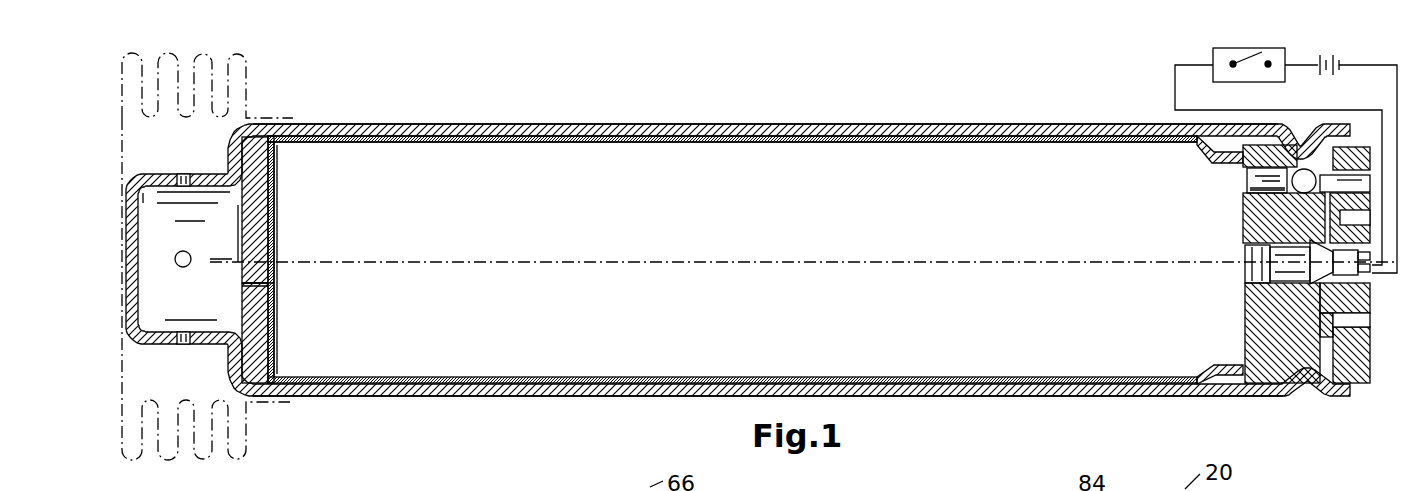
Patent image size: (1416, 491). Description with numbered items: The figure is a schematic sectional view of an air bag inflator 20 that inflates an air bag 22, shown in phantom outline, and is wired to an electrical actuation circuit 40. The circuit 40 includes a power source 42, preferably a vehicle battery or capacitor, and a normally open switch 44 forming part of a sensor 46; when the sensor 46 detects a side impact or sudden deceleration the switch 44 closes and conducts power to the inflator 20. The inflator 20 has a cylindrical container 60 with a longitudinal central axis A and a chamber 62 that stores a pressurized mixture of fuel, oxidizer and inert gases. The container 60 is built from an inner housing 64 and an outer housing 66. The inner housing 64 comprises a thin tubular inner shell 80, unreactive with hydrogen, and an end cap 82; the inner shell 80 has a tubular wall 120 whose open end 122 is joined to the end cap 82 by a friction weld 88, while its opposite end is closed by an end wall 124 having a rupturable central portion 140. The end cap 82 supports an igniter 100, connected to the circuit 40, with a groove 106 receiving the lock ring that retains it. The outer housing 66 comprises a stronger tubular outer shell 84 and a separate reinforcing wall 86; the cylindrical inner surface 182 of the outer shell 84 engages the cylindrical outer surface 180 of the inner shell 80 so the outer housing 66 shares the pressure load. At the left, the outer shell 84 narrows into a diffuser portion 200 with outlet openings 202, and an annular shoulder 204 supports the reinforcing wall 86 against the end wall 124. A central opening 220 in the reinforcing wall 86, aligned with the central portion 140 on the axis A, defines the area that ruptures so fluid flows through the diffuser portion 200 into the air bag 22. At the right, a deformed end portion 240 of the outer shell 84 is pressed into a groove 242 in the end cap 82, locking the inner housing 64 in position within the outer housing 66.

The inflator 20 is at (1024, 106).
The air bag 22 is at (244, 58).
The electrical actuation circuit 40 is at (1249, 148).
The power source 42 is at (1340, 66).
The switch 44 is at (1245, 55).
The sensor 46 is at (1278, 50).
The cylindrical container 60 is at (1358, 392).
The chamber 62 is at (1158, 251).
The inner housing 64 is at (1224, 398).
The outer housing 66 is at (385, 120).
The inner shell 80 is at (1069, 152).
The end cap 82 is at (1362, 361).
The outer shell 84 is at (313, 130).
The reinforcing wall 86 is at (256, 190).
The friction weld 88 is at (1228, 163).
The igniter 100 is at (1378, 286).
The groove 106 is at (1262, 240).
The tubular wall 120 is at (1110, 147).
The end 122 is at (1215, 366).
The end wall 124 is at (272, 327).
The rupturable central portion 140 is at (287, 258).
The cylindrical outer surface 180 is at (346, 397).
The cylindrical inner surface 182 is at (346, 384).
The diffuser portion 200 is at (154, 162).
The outlet openings 202 is at (184, 173).
The annular shoulder 204 is at (242, 418).
The central opening 220 is at (270, 284).
The end portion 240 is at (1320, 386).
The groove 242 is at (1297, 378).
The longitudinal central axis A is at (360, 262).